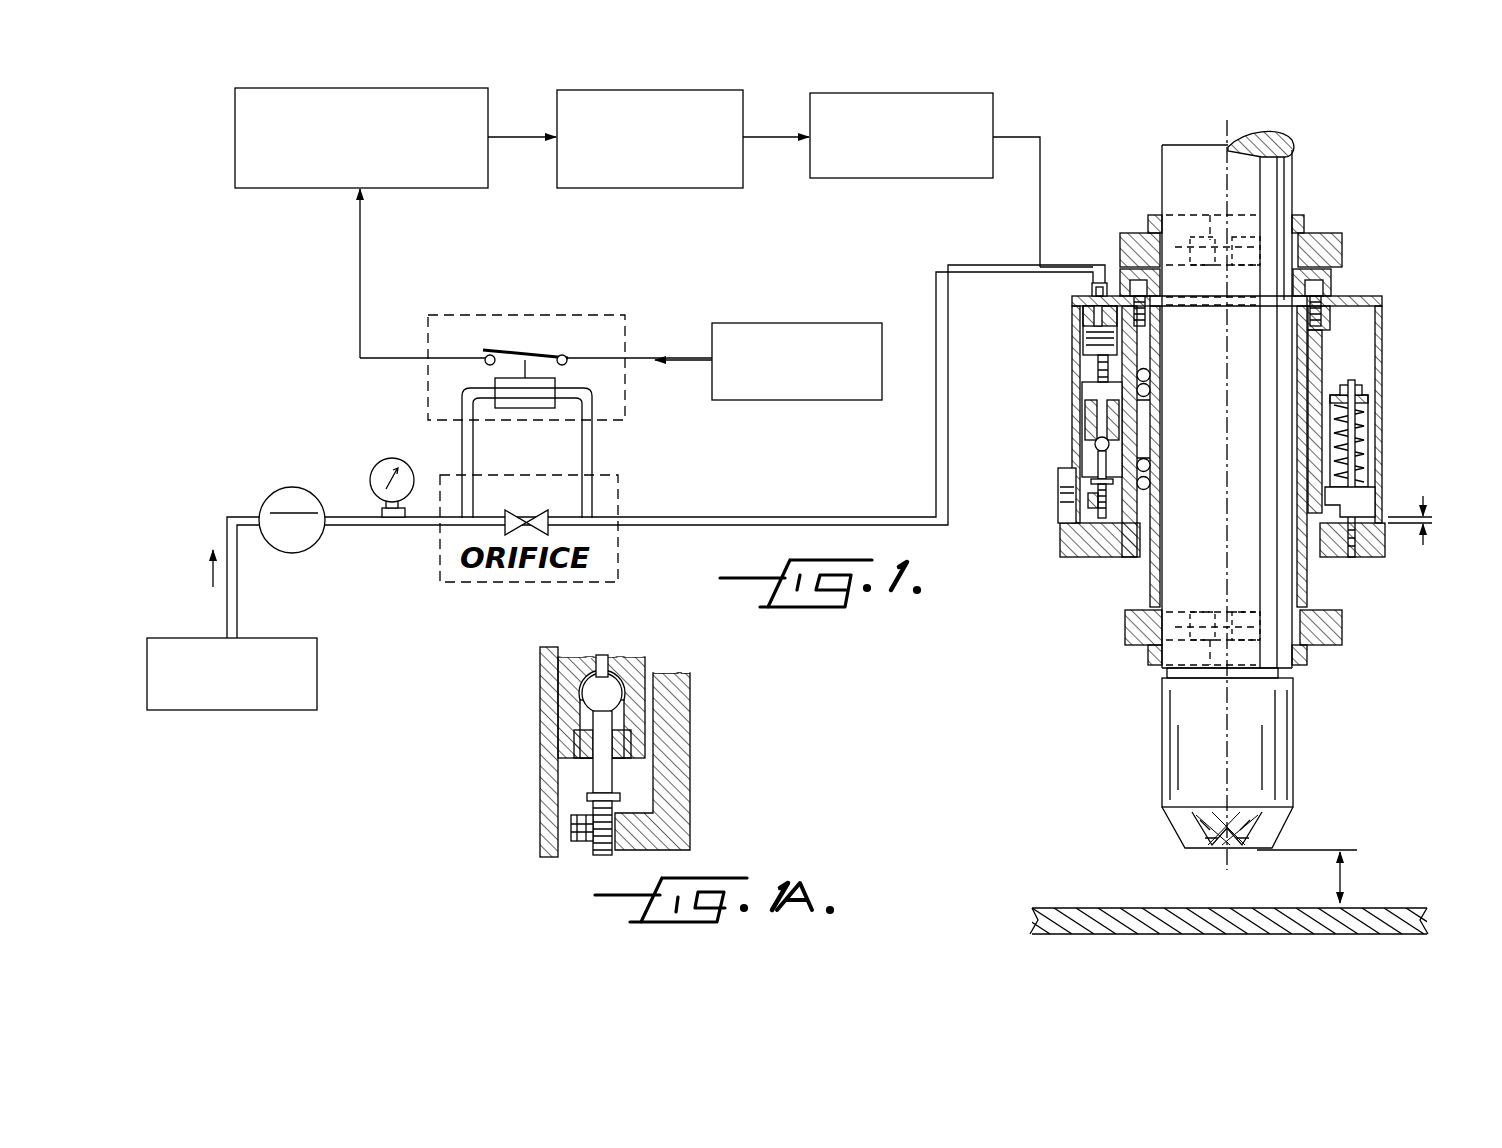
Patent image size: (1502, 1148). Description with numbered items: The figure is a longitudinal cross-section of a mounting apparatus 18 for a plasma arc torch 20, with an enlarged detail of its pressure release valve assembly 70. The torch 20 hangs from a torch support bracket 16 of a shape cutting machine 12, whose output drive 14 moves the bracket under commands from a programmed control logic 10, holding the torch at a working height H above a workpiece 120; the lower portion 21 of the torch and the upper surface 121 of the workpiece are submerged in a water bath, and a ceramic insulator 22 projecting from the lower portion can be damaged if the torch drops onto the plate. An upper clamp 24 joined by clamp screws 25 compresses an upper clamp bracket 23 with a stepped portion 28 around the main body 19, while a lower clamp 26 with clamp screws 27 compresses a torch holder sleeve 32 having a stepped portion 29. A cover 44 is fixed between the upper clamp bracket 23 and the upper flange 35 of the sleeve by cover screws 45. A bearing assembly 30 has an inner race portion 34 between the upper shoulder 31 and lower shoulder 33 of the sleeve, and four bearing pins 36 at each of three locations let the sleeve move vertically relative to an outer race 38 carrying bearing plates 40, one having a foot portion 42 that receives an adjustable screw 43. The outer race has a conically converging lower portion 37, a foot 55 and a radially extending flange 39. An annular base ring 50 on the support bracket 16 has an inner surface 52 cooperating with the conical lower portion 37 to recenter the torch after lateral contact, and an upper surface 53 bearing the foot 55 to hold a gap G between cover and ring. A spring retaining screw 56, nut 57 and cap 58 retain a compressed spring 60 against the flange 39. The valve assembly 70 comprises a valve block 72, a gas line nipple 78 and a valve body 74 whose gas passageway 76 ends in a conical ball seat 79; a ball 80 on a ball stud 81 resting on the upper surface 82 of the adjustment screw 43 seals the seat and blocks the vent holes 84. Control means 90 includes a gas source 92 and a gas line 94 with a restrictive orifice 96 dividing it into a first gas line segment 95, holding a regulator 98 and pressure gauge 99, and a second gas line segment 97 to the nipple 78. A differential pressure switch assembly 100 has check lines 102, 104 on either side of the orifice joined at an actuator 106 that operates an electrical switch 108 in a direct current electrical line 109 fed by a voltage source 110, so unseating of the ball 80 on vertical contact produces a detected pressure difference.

In FIG. 1, the programmed control logic 10 is at (237, 120).
In FIG. 1, the shape cutting machine 12 is at (690, 188).
In FIG. 1, the output drive 14 is at (895, 178).
In FIG. 1, the torch support bracket 16 is at (1045, 560).
In FIG. 1, the mounting apparatus 18 is at (1393, 300).
In FIG. 1, the main body 19 is at (1292, 172).
In FIG. 1, the plasma arc torch 20 is at (1157, 748).
In FIG. 1, the lower portion 21 is at (1282, 750).
In FIG. 1, the ceramic insulator 22 is at (1238, 855).
In FIG. 1, the upper clamp bracket 23 is at (1155, 215).
In FIG. 1, the upper clamp 24 is at (1340, 245).
In FIG. 1, the clamp screws 25 is at (1210, 235).
In FIG. 1, the lower clamp 26 is at (1310, 652).
In FIG. 1, the clamp screws 27 is at (1150, 660).
In FIG. 1, the stepped portion 28 is at (1304, 230).
In FIG. 1, the stepped portion 29 is at (1345, 625).
In FIG. 1, the bearing assembly 30 is at (1190, 362).
In FIG. 1, the upper shoulder 31 is at (1160, 366).
In FIG. 1, the torch holder sleeve 32 is at (1162, 582).
In FIG. 1, the lower shoulder 33 is at (1160, 500).
In FIG. 1, the inner race portion 34 is at (1150, 448).
In FIG. 1, the upper flange 35 is at (1320, 318).
In FIG. 1, the bearing pins 36 is at (1150, 380).
In FIG. 1, the conically converging lower portion 37 is at (1160, 532).
In FIG. 1, the outer race 38 is at (1296, 412).
In FIG. 1, the radially extending flange 39 is at (1345, 487).
In FIG. 1, the bearing plate 40 is at (1115, 368).
In FIG. 1A, the bearing plate 40 is at (690, 740).
In FIG. 1, the foot portion 42 is at (1110, 556).
In FIG. 1A, the foot portion 42 is at (640, 838).
In FIG. 1, the adjustable screw 43 is at (1095, 510).
In FIG. 1A, the adjustable screw 43 is at (592, 850).
In FIG. 1, the cover 44 is at (1342, 362).
In FIG. 1, the cover screws 45 is at (1132, 233).
In FIG. 1, the base ring 50 is at (1372, 558).
In FIG. 1, the inner surface 52 is at (1315, 560).
In FIG. 1, the upper surface 53 is at (1372, 508).
In FIG. 1, the foot 55 is at (1308, 508).
In FIG. 1, the spring retaining screw 56 is at (1366, 414).
In FIG. 1, the spring retaining nut 57 is at (1355, 388).
In FIG. 1, the spring retaining cap 58 is at (1362, 396).
In FIG. 1, the compressed spring 60 is at (1356, 445).
In FIG. 1, the pressure release valve assembly 70 is at (1078, 430).
In FIG. 1A, the pressure release valve assembly 70 is at (560, 726).
In FIG. 1, the valve block 72 is at (1085, 322).
In FIG. 1, the valve body 74 is at (1085, 400).
In FIG. 1A, the valve body 74 is at (560, 672).
In FIG. 1A, the gas passageway 76 is at (603, 657).
In FIG. 1, the gas line nipple 78 is at (1098, 283).
In FIG. 1A, the conical ball seat 79 is at (577, 702).
In FIG. 1, the ball 80 is at (1070, 455).
In FIG. 1A, the ball 80 is at (615, 683).
In FIG. 1, the ball stud 81 is at (1058, 492).
In FIG. 1A, the ball stud 81 is at (632, 703).
In FIG. 1A, the upper surface 82 is at (590, 797).
In FIG. 1A, the vent holes 84 is at (577, 768).
In FIG. 1, the control means 90 is at (618, 448).
In FIG. 1, the source of pressurized gas 92 is at (272, 638).
In FIG. 1, the gas line 94 is at (938, 458).
In FIG. 1, the first gas line segment 95 is at (482, 522).
In FIG. 1, the restrictive orifice 96 is at (533, 508).
In FIG. 1, the second gas line segment 97 is at (600, 503).
In FIG. 1, the regulator 98 is at (272, 495).
In FIG. 1, the pressure gauge 99 is at (379, 466).
In FIG. 1, the differential pressure switch assembly 100 is at (565, 345).
In FIG. 1, the gas pressure check line 102 is at (462, 412).
In FIG. 1, the gas pressure check line 104 is at (592, 405).
In FIG. 1, the actuator 106 is at (525, 410).
In FIG. 1, the electrical switch 108 is at (522, 352).
In FIG. 1, the direct current electrical line 109 is at (360, 292).
In FIG. 1, the voltage source 110 is at (843, 323).
In FIG. 1, the workpiece 120 is at (1078, 905).
In FIG. 1, the upper surface 121 is at (1135, 905).
In FIG. 1, the gap G is at (1438, 518).
In FIG. 1, the working height H is at (1345, 880).